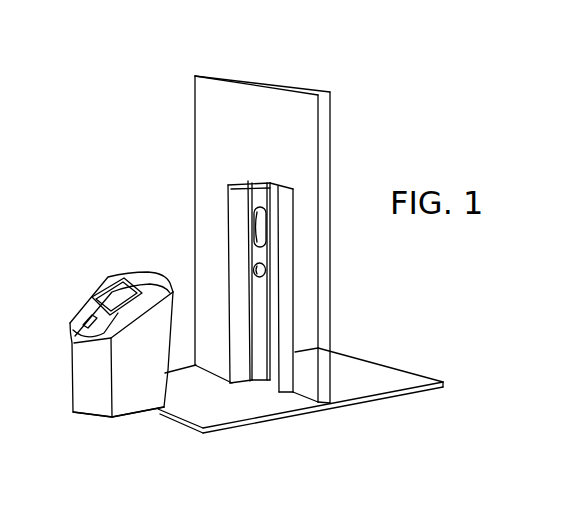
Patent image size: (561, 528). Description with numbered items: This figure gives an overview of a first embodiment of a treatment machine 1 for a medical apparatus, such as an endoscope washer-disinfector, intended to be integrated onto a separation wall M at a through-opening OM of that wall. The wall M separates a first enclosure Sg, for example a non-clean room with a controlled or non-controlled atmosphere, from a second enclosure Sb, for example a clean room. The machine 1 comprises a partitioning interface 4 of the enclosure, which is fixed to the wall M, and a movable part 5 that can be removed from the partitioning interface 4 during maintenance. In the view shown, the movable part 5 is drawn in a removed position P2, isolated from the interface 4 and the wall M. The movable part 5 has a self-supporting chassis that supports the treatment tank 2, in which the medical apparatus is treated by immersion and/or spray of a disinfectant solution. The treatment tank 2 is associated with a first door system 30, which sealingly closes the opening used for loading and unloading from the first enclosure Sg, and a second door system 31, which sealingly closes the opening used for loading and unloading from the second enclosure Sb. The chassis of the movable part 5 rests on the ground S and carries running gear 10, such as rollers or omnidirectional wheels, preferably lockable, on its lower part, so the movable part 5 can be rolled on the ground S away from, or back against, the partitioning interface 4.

The treatment machine 1 is at (104, 147).
The movable part 5 is at (113, 336).
The treatment tank 2 is at (128, 283).
The first door system 30 is at (107, 295).
The running gear 10 is at (83, 412).
The partitioning interface 4 is at (236, 254).
The second door system 31 is at (258, 272).
The wall M is at (324, 153).
The ground S is at (417, 378).
The removed position P2 is at (268, 436).
The first enclosure Sg is at (162, 186).
The second enclosure Sb is at (360, 75).
The through-opening OM is at (252, 194).